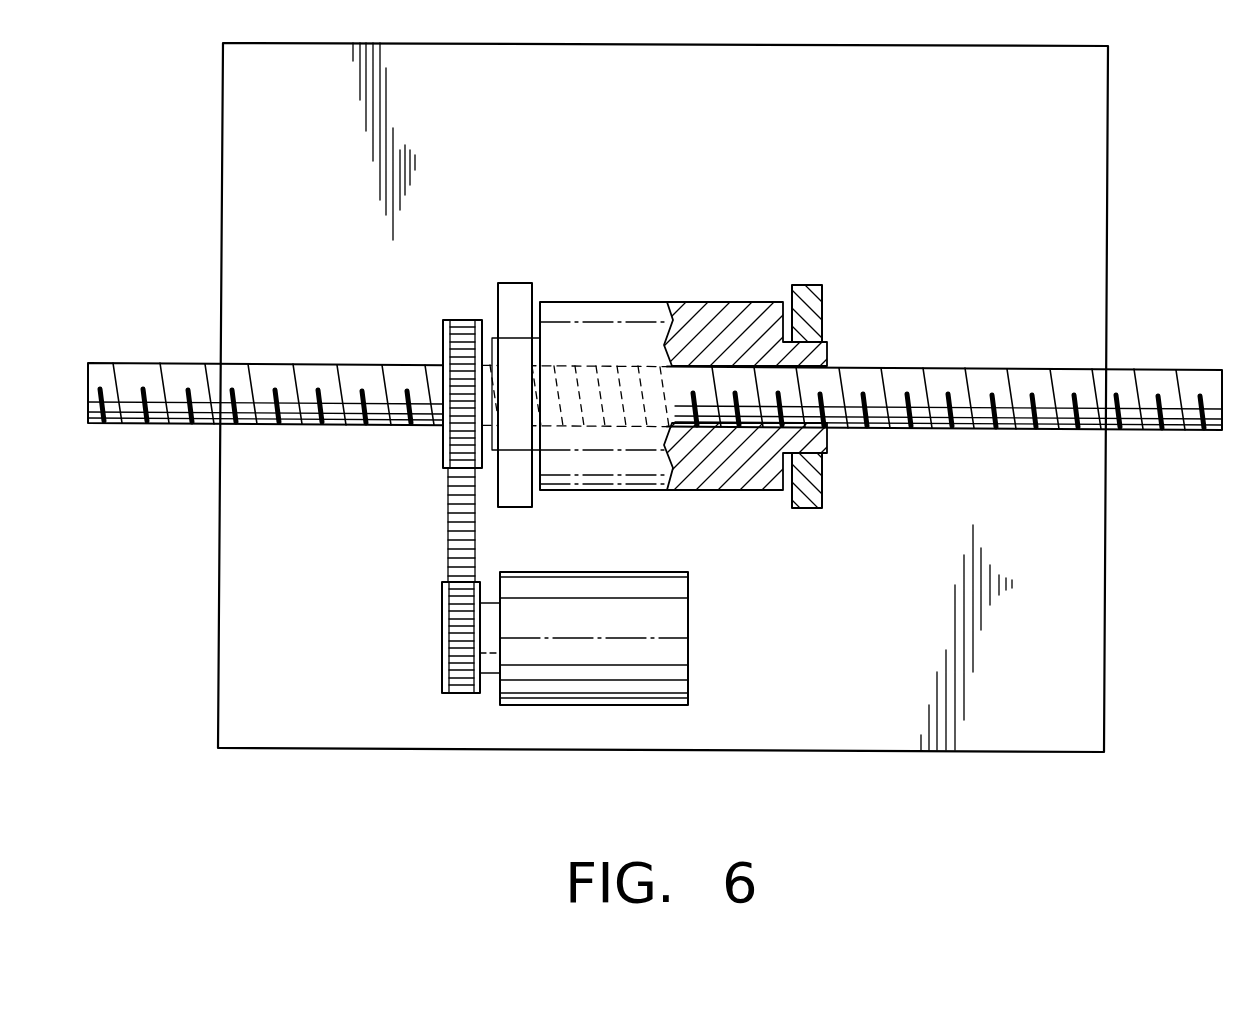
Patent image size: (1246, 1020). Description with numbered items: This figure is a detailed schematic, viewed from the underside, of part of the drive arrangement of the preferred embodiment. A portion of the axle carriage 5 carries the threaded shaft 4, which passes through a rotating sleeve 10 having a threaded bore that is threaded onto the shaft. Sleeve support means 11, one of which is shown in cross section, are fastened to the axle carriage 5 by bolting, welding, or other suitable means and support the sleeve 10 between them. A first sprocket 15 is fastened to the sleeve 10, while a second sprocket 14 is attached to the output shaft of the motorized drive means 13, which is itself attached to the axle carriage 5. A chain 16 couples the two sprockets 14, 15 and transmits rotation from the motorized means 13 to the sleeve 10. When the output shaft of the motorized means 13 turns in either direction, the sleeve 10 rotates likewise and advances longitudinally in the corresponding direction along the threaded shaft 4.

The threaded shaft 4 is at (188, 428).
The axle carriage 5 is at (277, 138).
The sleeve 10 is at (600, 320).
The sleeve support means 11 is at (520, 290).
The motorized drive means 13 is at (652, 632).
The sprocket 14 is at (442, 623).
The sprocket 15 is at (443, 455).
The chain 16 is at (447, 538).